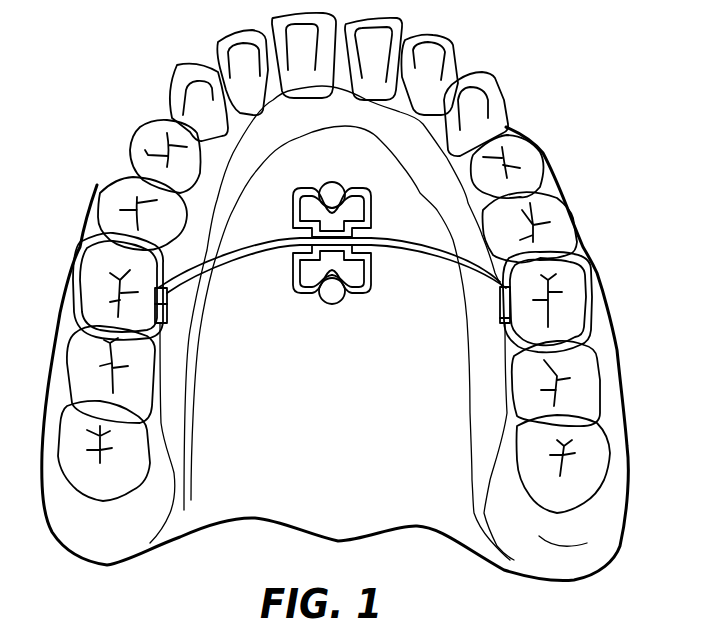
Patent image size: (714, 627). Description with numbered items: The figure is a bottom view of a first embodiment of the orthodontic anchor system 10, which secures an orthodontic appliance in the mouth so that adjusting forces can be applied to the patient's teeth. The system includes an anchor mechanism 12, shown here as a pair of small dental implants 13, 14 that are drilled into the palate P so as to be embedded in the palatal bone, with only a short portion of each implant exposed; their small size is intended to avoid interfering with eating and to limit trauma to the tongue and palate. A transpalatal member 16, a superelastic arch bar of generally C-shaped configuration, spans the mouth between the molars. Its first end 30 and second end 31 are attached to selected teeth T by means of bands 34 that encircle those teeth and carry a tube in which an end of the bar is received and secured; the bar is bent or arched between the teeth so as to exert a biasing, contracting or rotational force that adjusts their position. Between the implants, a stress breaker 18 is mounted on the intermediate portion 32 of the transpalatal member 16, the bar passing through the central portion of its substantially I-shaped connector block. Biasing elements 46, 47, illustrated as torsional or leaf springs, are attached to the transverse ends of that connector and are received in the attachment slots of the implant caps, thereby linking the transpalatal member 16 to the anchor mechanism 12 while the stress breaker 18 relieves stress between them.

The orthodontic anchor system 10 is at (266, 317).
The anchor mechanism 12 is at (380, 208).
The dental implant 13 is at (332, 181).
The dental implant 14 is at (330, 305).
The transpalatal member 16 is at (440, 258).
The stress breaker 18 is at (293, 275).
The first end 30 is at (498, 316).
The second end 31 is at (168, 300).
The intermediate portion 32 is at (371, 274).
The band 34 is at (88, 253).
The biasing element 46 is at (362, 300).
The biasing element 47 is at (292, 198).
The tooth T is at (95, 293).
The palate P is at (379, 453).